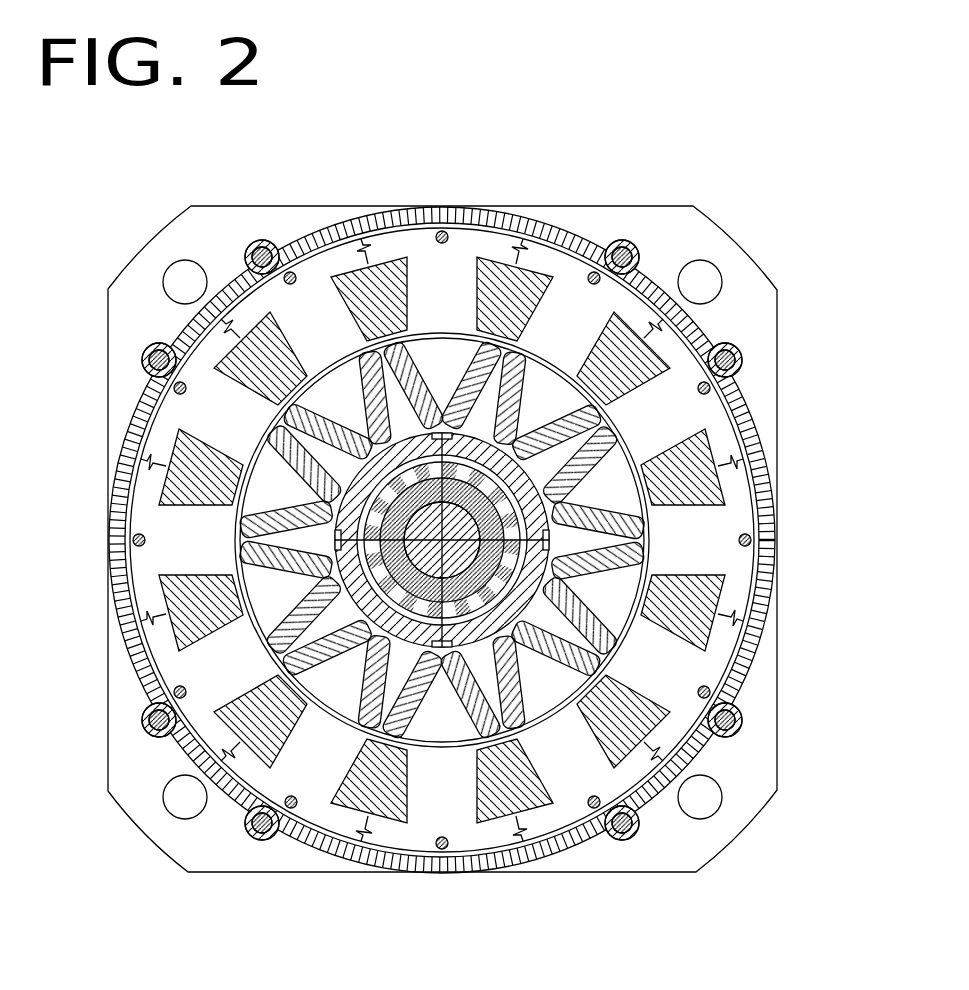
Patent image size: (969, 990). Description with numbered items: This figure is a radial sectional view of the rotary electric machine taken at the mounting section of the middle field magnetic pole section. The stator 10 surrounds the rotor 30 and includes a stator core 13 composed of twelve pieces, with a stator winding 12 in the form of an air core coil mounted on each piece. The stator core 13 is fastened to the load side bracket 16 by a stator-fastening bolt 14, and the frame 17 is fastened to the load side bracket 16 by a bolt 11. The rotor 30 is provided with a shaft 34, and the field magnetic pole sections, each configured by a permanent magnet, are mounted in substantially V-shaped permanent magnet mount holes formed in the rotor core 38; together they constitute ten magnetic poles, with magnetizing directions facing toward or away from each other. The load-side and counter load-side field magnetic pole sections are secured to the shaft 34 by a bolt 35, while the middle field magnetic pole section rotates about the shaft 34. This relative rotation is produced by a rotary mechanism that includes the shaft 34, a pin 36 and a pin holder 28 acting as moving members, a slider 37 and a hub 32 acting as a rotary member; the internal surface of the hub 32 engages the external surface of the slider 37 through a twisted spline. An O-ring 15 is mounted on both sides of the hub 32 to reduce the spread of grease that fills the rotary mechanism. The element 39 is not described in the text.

The stator 10 is at (255, 268).
The bolt 11 is at (290, 273).
The stator winding 12 is at (363, 283).
The stator core 13 is at (445, 272).
The stator-fastening bolt 14 is at (160, 346).
The O-ring 15 is at (550, 215).
The load side bracket 16 is at (658, 215).
The frame 17 is at (700, 260).
The pin holder 28 is at (458, 540).
The rotor 30 is at (623, 433).
The hub 32 is at (475, 480).
The shaft 34 is at (480, 516).
The bolt 35 is at (455, 551).
The pin 36 is at (573, 405).
The slider 37 is at (587, 393).
The rotor core 38 is at (535, 360).
The housing boss 39 is at (738, 732).